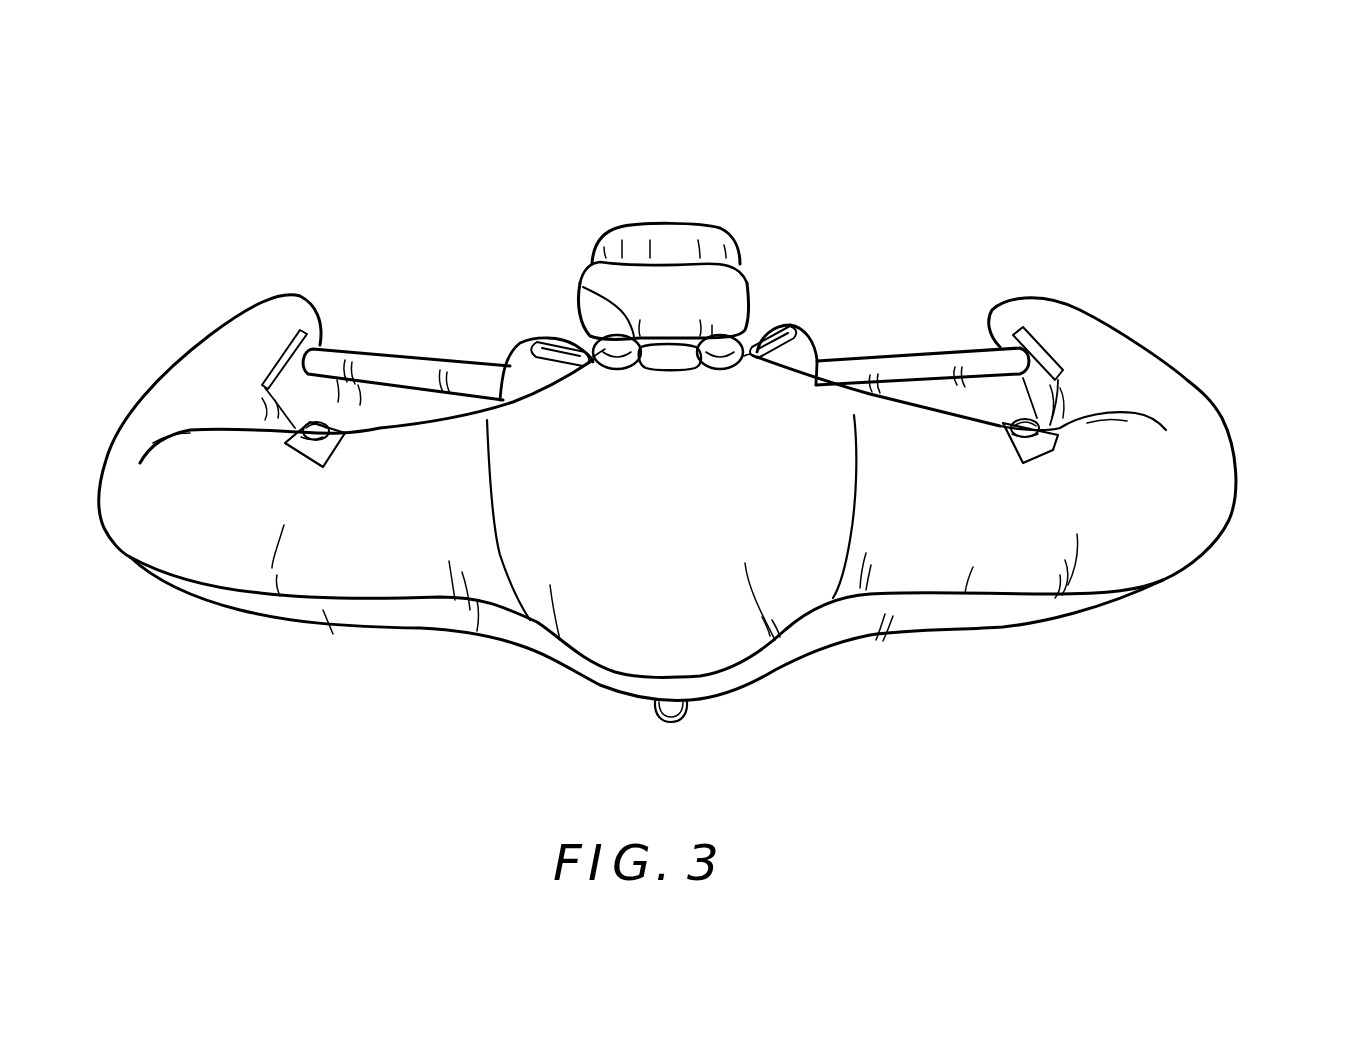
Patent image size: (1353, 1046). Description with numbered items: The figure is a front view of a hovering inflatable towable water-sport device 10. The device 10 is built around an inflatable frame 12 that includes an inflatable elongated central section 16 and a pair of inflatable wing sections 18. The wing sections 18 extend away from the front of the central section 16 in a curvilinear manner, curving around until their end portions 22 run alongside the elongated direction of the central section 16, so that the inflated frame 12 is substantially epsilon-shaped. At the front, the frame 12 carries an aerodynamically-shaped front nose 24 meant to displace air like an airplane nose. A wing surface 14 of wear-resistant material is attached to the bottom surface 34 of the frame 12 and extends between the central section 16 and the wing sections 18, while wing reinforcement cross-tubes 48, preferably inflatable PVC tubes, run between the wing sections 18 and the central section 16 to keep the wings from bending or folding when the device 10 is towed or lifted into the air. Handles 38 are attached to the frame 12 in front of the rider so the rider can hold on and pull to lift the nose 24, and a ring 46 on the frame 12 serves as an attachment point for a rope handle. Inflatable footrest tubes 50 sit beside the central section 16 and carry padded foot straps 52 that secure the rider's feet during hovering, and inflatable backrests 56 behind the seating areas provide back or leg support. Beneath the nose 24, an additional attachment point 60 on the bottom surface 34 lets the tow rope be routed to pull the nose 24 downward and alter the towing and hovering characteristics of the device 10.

The hovering inflatable towable water-sport device 10 is at (1221, 280).
The inflatable frame 12 is at (1111, 542).
The wing surface 14 is at (360, 410).
The inflatable elongated central section 16 is at (618, 431).
The inflatable wing sections 18 is at (160, 378).
The end portions of the wing sections 22 is at (317, 307).
The front nose 24 is at (705, 632).
The bottom surface 34 is at (353, 627).
The handles 38 is at (582, 293).
The ring 46 is at (303, 433).
The wing reinforcement cross-tubes 48 is at (377, 356).
The inflatable footrest tubes 50 is at (530, 367).
The foot straps 52 is at (564, 338).
The inflatable backrests 56 is at (650, 222).
The additional attachment point 60 is at (686, 716).